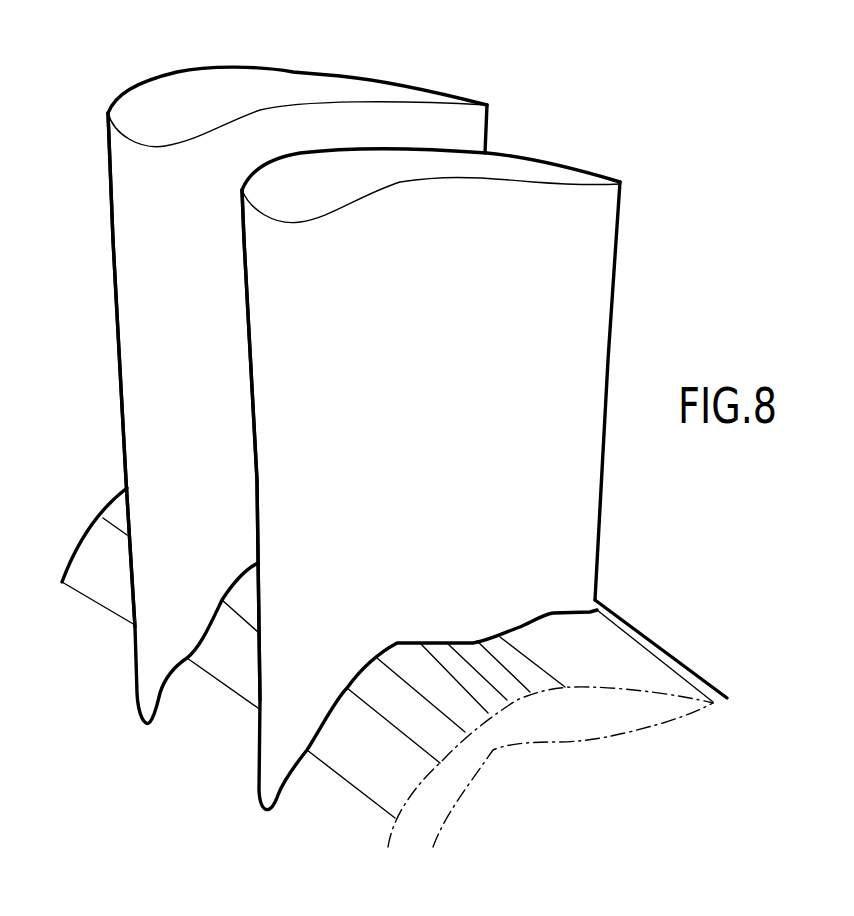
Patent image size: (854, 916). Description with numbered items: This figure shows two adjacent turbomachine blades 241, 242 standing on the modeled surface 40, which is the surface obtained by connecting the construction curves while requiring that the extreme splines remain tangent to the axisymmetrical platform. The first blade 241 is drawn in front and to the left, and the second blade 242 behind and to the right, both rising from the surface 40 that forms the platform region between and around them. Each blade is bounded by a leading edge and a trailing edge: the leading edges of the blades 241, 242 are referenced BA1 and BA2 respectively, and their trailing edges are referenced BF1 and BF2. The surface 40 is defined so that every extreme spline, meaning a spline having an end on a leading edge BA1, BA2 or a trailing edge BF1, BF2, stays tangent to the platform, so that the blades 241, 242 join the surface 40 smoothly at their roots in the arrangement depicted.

The blade 241 is at (130, 80).
The blade 242 is at (637, 202).
The leading edge BA1 is at (112, 212).
The leading edge BA2 is at (250, 338).
The trailing edge BF1 is at (488, 132).
The trailing edge BF2 is at (612, 327).
The surface 40 is at (608, 669).